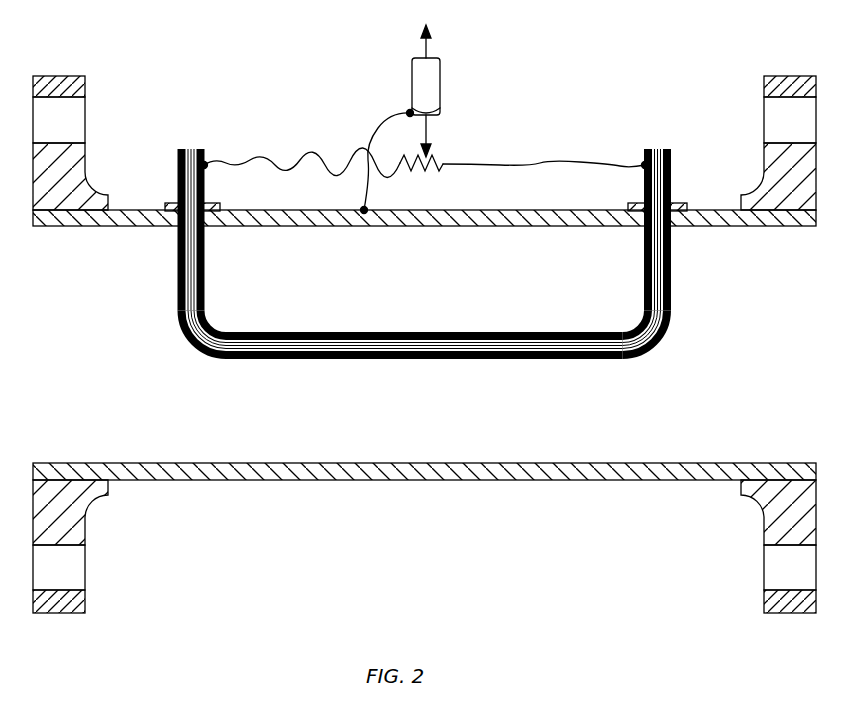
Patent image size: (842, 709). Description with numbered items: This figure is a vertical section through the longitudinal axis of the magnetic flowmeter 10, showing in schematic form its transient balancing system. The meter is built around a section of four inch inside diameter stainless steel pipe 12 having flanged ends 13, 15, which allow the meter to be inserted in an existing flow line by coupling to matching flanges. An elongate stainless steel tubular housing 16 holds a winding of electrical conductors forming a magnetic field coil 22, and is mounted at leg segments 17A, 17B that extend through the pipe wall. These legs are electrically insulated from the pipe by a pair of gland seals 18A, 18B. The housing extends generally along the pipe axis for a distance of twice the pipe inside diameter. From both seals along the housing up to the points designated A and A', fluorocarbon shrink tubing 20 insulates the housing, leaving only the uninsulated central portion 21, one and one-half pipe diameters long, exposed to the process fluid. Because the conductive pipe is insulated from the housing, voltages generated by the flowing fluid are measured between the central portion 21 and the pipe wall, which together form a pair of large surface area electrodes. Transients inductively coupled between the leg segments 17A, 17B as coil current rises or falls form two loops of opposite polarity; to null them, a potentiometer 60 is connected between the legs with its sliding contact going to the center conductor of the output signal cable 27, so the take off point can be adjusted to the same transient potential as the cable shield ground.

The magnetic flowmeter 10 is at (585, 93).
The stainless steel pipe 12 is at (292, 482).
The flanged end 13 is at (85, 595).
The flanged end 15 is at (764, 594).
The tubular housing 16 is at (222, 162).
The leg segment 17A is at (177, 270).
The leg segment 17B is at (673, 283).
The gland seal 18A is at (165, 203).
The gland seal 18B is at (684, 203).
The fluorocarbon shrink tubing 20 is at (180, 335).
The uninsulated central portion 21 is at (475, 358).
The magnetic field coil 22 is at (195, 150).
The output signal cable 27 is at (440, 102).
The potentiometer 60 is at (443, 160).
The point A is at (265, 312).
The point A' is at (586, 312).